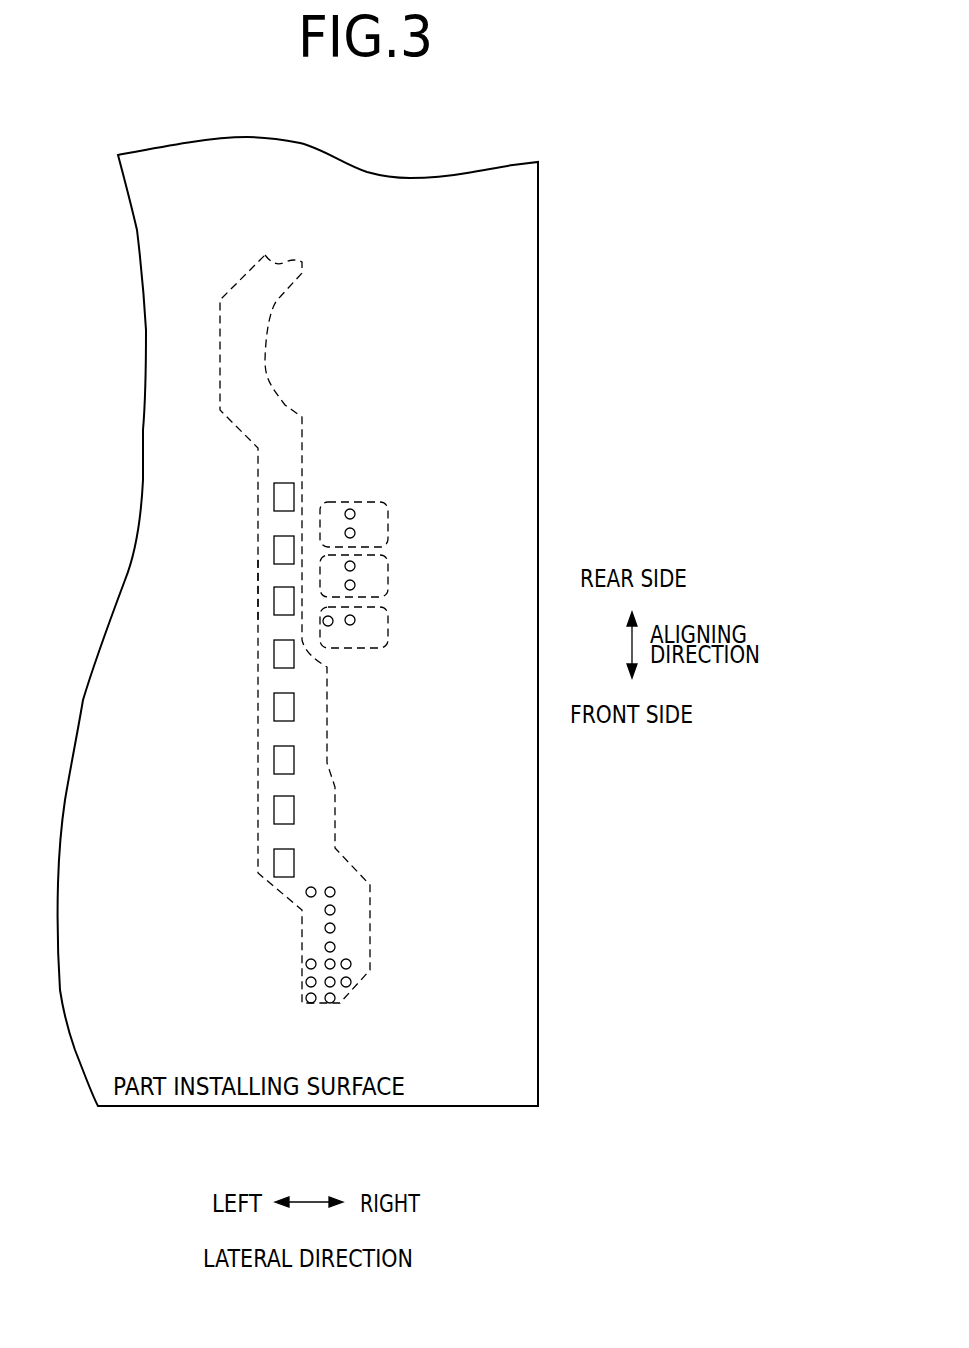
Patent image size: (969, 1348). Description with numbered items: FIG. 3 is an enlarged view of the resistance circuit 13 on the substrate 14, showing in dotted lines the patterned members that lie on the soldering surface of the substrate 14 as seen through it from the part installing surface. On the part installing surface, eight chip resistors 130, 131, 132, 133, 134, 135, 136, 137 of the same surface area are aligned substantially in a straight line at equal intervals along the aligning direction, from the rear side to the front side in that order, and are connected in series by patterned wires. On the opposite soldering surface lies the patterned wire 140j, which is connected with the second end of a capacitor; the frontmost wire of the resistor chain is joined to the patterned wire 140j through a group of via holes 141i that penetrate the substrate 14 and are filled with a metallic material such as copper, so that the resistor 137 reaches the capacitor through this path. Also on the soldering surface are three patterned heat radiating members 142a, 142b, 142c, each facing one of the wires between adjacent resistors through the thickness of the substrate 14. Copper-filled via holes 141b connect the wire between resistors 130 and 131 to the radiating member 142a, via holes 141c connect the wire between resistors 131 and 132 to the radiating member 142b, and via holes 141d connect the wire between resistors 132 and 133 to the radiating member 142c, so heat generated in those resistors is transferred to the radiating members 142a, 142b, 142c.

The substrate 14 is at (512, 215).
The resistance circuit 13 is at (345, 385).
The patterned wire 140j is at (258, 585).
The resistor 130 is at (283, 492).
The resistor 131 is at (287, 543).
The resistor 132 is at (293, 612).
The resistor 133 is at (288, 660).
The resistor 134 is at (290, 715).
The resistor 135 is at (291, 761).
The resistor 136 is at (294, 815).
The resistor 137 is at (294, 866).
The via holes 141b is at (356, 514).
The via holes 141c is at (356, 585).
The via holes 141d is at (333, 625).
The via holes 141i is at (346, 989).
The patterned heat radiating member 142a is at (367, 502).
The patterned heat radiating member 142b is at (388, 583).
The patterned heat radiating member 142c is at (388, 647).